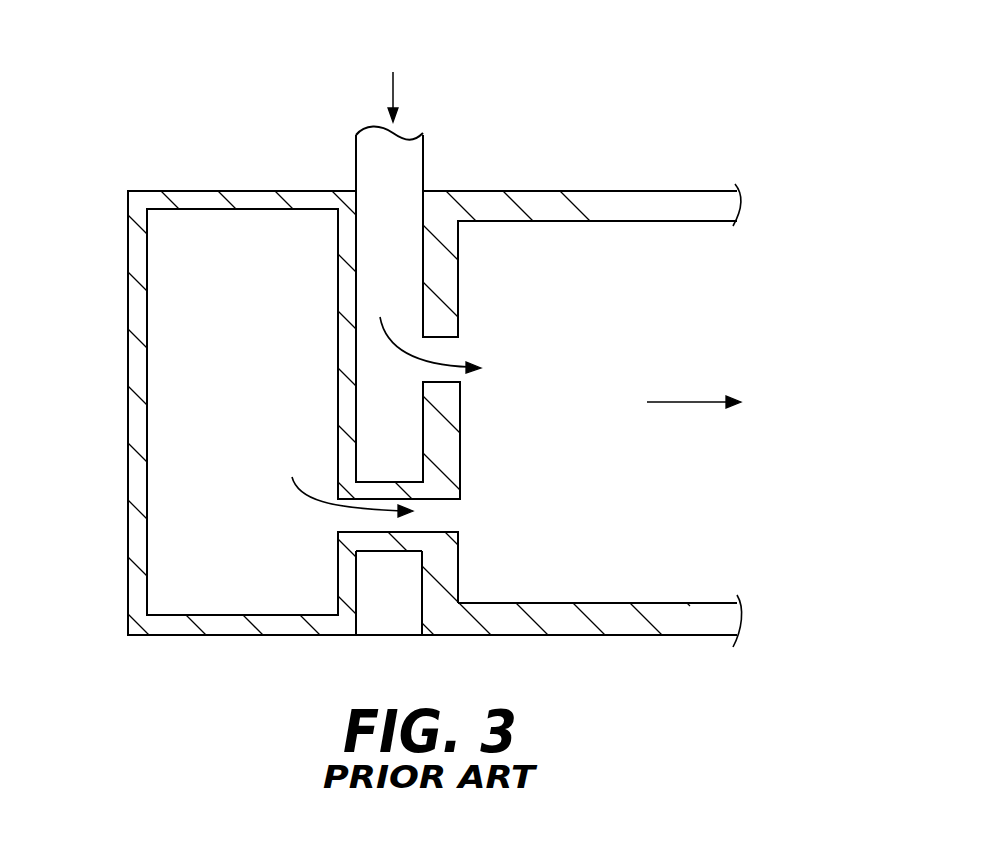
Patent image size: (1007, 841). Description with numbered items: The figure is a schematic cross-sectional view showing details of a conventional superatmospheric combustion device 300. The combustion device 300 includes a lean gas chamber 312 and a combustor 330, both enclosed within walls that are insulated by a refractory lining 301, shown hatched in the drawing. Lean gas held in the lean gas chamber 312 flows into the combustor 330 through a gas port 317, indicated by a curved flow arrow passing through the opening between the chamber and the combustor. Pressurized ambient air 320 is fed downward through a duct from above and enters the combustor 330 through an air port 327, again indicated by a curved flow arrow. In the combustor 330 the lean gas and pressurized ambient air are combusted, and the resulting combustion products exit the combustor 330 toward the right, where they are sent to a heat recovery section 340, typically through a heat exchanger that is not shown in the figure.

The combustion device 300 is at (454, 357).
The refractory lining 301 is at (147, 330).
The lean gas chamber 312 is at (268, 396).
The gas port 317 is at (433, 522).
The pressurized ambient air 320 is at (389, 66).
The air port 327 is at (450, 348).
The combustor 330 is at (615, 479).
The heat recovery section 340 is at (766, 434).